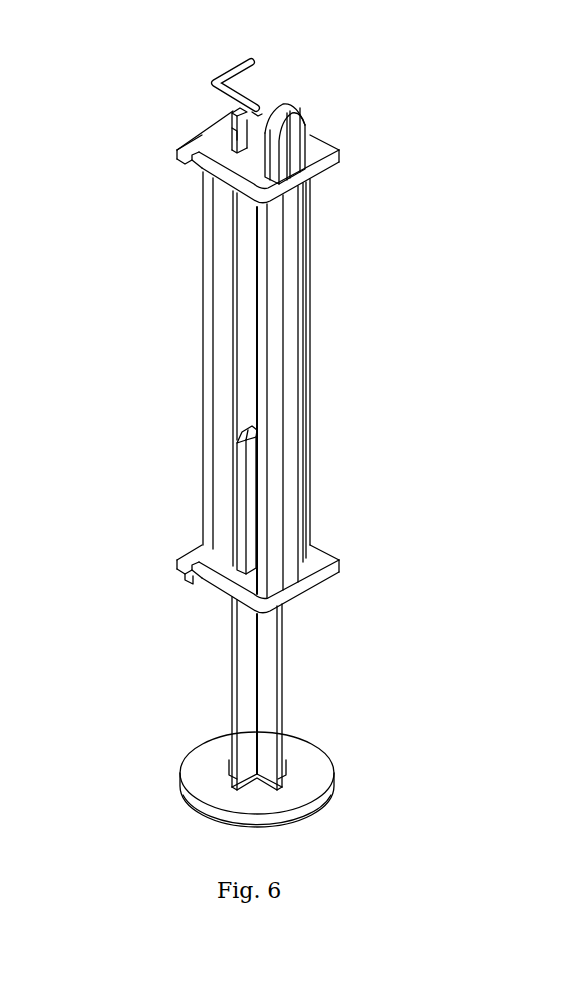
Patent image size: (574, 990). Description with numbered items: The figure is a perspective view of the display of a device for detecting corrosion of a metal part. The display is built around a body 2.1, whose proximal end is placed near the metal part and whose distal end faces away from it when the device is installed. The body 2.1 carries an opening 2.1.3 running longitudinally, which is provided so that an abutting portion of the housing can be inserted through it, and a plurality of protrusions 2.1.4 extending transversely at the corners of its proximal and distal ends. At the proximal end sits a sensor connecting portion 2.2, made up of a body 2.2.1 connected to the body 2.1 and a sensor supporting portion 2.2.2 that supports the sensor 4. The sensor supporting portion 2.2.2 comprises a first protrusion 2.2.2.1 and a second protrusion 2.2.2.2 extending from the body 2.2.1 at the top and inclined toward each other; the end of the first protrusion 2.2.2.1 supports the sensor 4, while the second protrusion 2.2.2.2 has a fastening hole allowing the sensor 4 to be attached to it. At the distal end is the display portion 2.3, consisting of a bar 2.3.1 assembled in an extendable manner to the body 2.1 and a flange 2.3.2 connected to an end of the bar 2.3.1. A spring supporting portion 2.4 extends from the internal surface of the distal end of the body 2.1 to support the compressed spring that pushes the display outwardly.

The sensor 4 is at (217, 57).
The body 2.1 is at (211, 392).
The opening 2.1.3 is at (240, 296).
The protrusions 2.1.4 is at (192, 574).
The sensor connecting portion 2.2 is at (251, 123).
The body 2.2.1 is at (233, 128).
The sensor supporting portion 2.2.2 is at (230, 113).
The first protrusion 2.2.2.1 is at (259, 108).
The second protrusion 2.2.2.2 is at (283, 103).
The display portion 2.3 is at (226, 712).
The bar 2.3.1 is at (232, 642).
The flange 2.3.2 is at (182, 763).
The spring supporting portion 2.4 is at (238, 527).